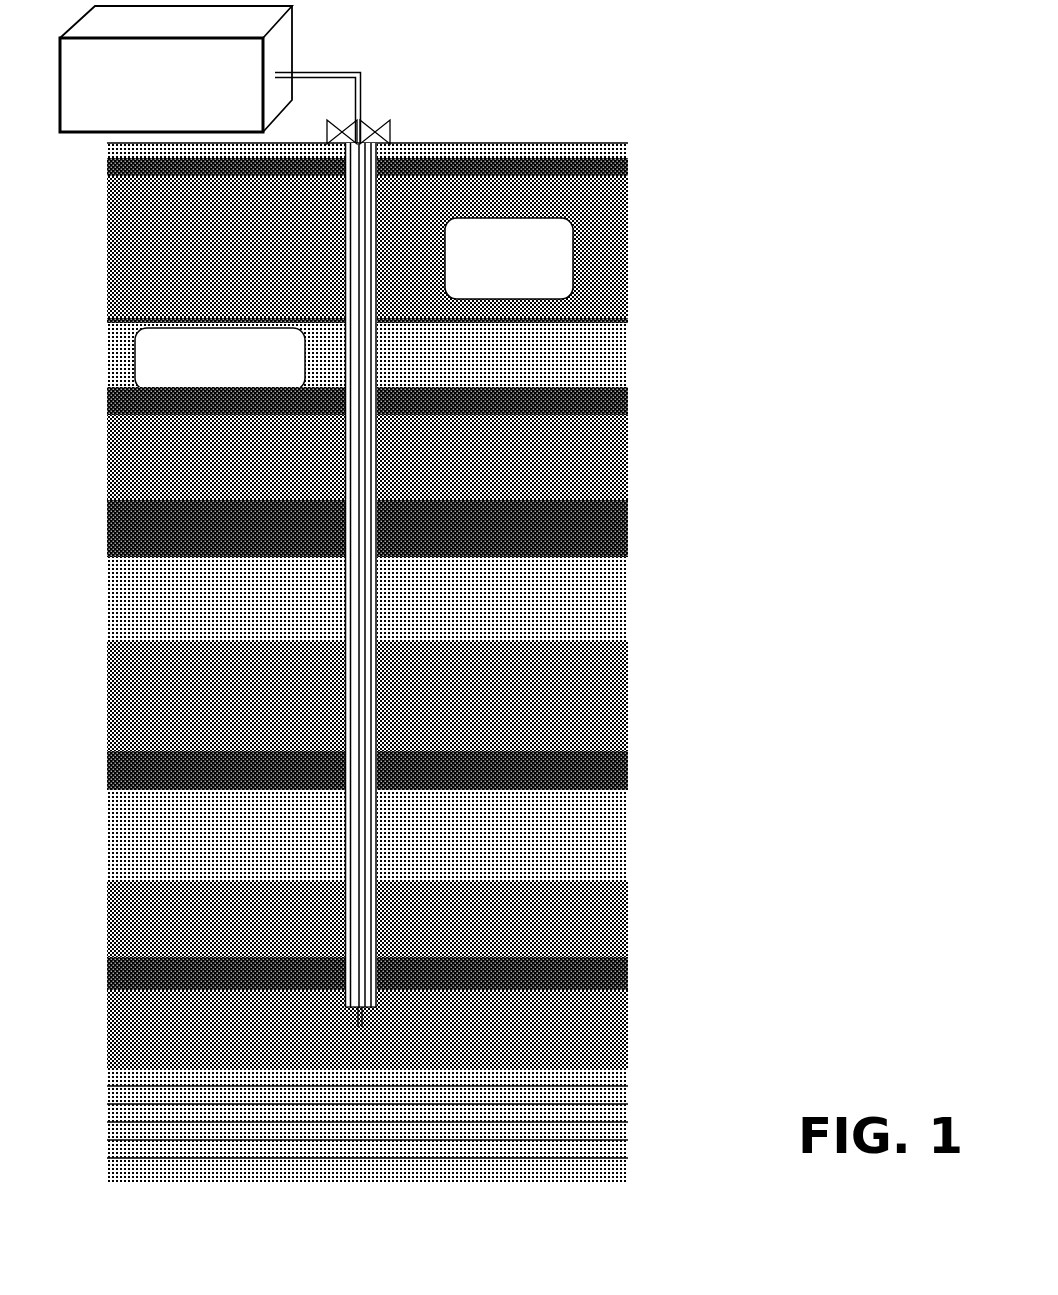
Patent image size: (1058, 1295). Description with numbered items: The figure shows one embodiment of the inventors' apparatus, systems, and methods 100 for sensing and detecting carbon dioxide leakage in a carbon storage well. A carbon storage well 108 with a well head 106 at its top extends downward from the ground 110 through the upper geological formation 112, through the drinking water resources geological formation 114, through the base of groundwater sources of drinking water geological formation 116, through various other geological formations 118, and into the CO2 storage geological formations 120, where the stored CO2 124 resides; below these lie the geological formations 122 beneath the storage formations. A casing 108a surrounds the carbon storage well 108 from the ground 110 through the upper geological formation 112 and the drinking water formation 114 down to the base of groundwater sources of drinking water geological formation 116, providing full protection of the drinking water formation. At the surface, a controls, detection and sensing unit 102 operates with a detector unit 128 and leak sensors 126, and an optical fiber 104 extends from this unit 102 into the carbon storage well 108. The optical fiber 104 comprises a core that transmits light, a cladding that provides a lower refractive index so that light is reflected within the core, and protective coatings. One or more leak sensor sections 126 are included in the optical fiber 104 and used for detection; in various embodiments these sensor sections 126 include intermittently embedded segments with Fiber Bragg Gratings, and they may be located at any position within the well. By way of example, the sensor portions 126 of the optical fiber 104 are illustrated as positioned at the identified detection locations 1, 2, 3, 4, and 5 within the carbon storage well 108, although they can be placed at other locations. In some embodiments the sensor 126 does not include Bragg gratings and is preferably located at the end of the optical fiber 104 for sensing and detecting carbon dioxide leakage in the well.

The apparatus, systems, and methods 100 is at (560, 80).
The controls, detection & sensing unit 102 is at (212, 69).
The optical fiber 104 is at (358, 93).
The well head 106 is at (370, 122).
The carbon storage well 108 is at (385, 197).
The casing 108a is at (443, 197).
The ground 110 is at (610, 153).
The upper geological formation 112 is at (603, 180).
The drinking water resources geological formation 114 is at (573, 258).
The base of groundwater sources of drinking water geological formation 116 is at (135, 352).
The various geological formations 118 is at (628, 390).
The CO2 storage geological formations 120 is at (628, 985).
The geological formations below CO2 storage geological formations 122 is at (628, 1068).
The stored CO2 124 is at (457, 1018).
The leak sensor section of optical fiber 126 is at (227, 586).
The detector unit 128 is at (161, 60).
The detection location 1 is at (318, 193).
The detection location 2 is at (317, 469).
The detection location 3 is at (316, 789).
The detection location 4 is at (316, 947).
The detection location 5 is at (329, 1046).